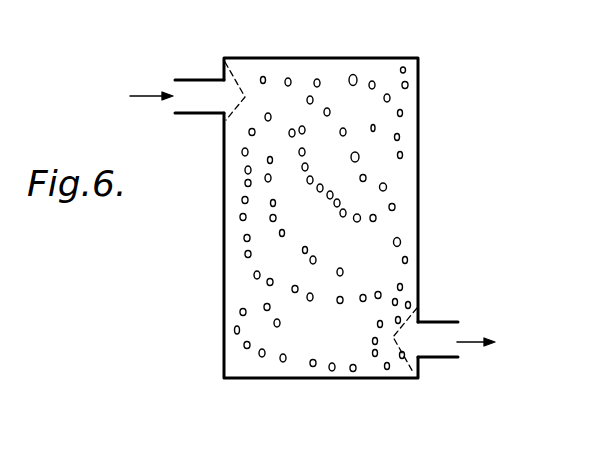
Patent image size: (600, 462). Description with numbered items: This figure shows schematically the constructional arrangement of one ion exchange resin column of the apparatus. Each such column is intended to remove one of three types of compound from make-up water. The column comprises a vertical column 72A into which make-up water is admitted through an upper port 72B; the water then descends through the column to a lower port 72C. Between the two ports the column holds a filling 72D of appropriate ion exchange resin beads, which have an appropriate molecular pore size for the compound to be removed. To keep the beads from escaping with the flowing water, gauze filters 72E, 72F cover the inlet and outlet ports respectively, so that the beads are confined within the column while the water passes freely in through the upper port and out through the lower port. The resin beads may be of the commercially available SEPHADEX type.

The vertical column 72A is at (418, 240).
The upper port 72B is at (197, 80).
The lower port 72C is at (445, 322).
The filling of ion exchange resin beads 72D is at (386, 187).
The gauze filter 72E is at (245, 112).
The gauze filter 72F is at (405, 358).